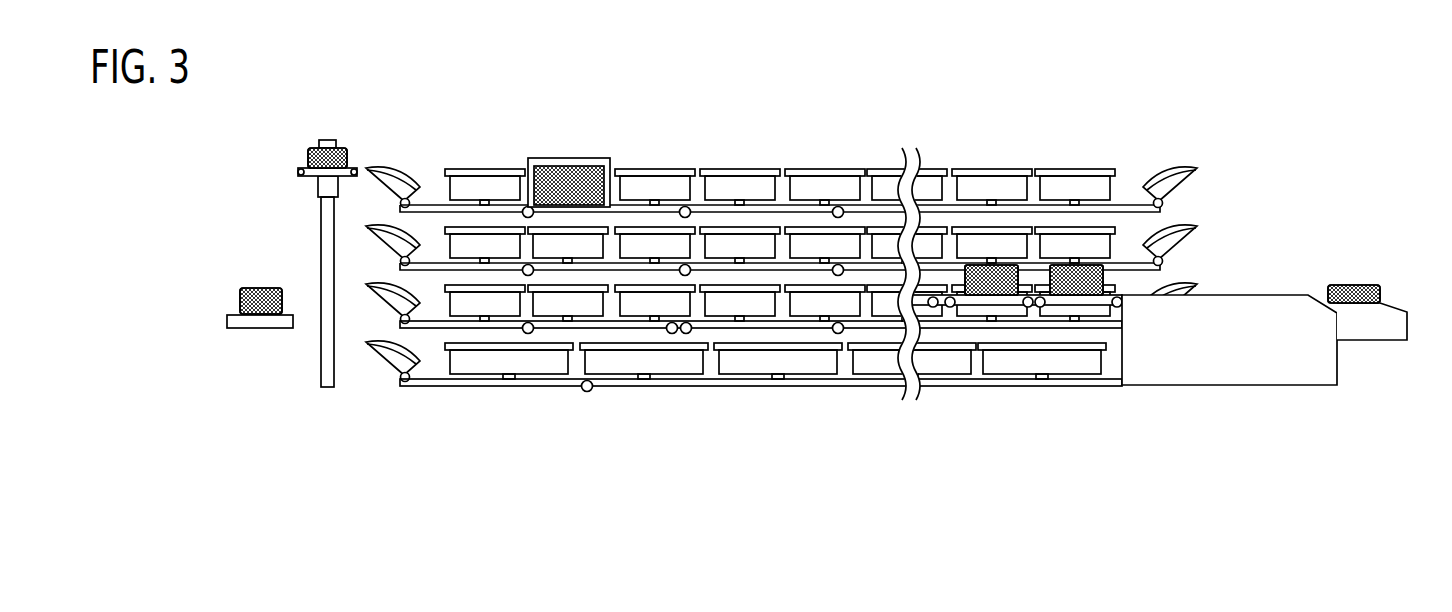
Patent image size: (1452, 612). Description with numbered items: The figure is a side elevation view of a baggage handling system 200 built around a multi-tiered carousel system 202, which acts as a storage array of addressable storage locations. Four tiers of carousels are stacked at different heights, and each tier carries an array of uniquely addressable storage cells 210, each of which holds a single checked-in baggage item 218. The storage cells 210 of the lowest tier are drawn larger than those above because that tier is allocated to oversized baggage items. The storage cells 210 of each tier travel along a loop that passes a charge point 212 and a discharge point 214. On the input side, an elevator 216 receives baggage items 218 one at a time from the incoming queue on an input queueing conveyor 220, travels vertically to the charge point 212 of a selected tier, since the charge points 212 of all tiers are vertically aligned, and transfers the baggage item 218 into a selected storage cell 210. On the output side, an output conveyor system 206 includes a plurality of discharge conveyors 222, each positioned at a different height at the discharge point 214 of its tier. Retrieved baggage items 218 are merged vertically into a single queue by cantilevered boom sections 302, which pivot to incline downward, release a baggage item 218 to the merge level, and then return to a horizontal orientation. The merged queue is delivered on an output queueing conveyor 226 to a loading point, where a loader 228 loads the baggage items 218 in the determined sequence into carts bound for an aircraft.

The baggage handling system 200 is at (1186, 103).
The multi-tiered carousel system 202 is at (1010, 143).
The output conveyor system 206 is at (621, 416).
The storage cell 210 is at (401, 168).
The charge point 212 is at (372, 144).
The discharge point 214 is at (301, 228).
The elevator 216 is at (319, 179).
The baggage item 218 is at (309, 156).
The input queueing conveyor 220 is at (259, 330).
The discharge conveyor 222 is at (645, 212).
The output queueing conveyor 226 is at (1087, 302).
The loader 228 is at (1238, 386).
The cantilevered boom section 302 is at (803, 212).